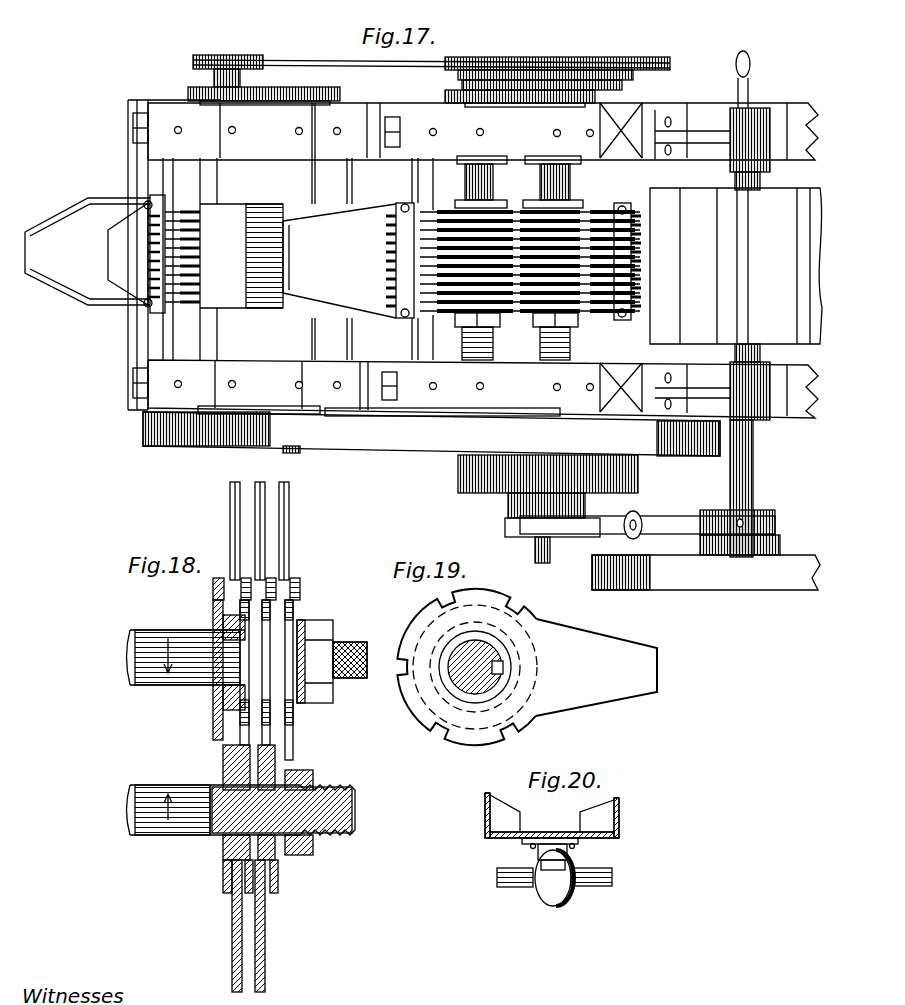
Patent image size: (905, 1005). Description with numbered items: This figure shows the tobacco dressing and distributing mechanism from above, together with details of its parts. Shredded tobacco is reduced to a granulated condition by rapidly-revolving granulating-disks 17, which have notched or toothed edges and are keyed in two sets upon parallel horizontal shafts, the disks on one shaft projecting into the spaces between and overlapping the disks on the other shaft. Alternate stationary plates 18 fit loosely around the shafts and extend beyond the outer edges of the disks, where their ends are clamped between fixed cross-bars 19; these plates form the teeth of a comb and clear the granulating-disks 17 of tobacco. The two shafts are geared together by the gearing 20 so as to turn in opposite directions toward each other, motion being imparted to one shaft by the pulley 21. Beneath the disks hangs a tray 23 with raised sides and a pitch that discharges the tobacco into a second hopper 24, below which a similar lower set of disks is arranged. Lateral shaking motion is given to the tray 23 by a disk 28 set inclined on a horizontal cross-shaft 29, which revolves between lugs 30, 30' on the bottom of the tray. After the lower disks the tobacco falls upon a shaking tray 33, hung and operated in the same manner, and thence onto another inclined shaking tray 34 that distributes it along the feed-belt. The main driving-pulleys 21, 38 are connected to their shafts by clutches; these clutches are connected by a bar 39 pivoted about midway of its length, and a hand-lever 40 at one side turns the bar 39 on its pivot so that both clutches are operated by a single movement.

In FIG. 17, the granulating-disks 17 is at (515, 304).
In FIG. 18, the granulating-disks 17 is at (292, 712).
In FIG. 19, the granulating-disks 17 is at (478, 606).
In FIG. 18, the stationary plates 18 is at (281, 922).
In FIG. 17, the cross-bars 19 is at (632, 253).
In FIG. 17, the gearing 20 is at (429, 83).
In FIG. 17, the pulley 21 is at (458, 479).
In FIG. 17, the tray 23 is at (339, 261).
In FIG. 20, the tray 23 is at (552, 815).
In FIG. 17, the second hopper 24 is at (241, 256).
In FIG. 20, the disk 28 is at (562, 896).
In FIG. 20, the cross-shaft 29 is at (585, 860).
In FIG. 20, the lug 30 is at (529, 855).
In FIG. 20, the lug 30' is at (579, 855).
In FIG. 17, the shaking tray 33 is at (134, 254).
In FIG. 17, the shaking tray 34 is at (95, 254).
In FIG. 17, the main driving-pulley 38 is at (706, 587).
In FIG. 17, the bar 39 is at (650, 525).
In FIG. 17, the hand-lever 40 is at (633, 534).